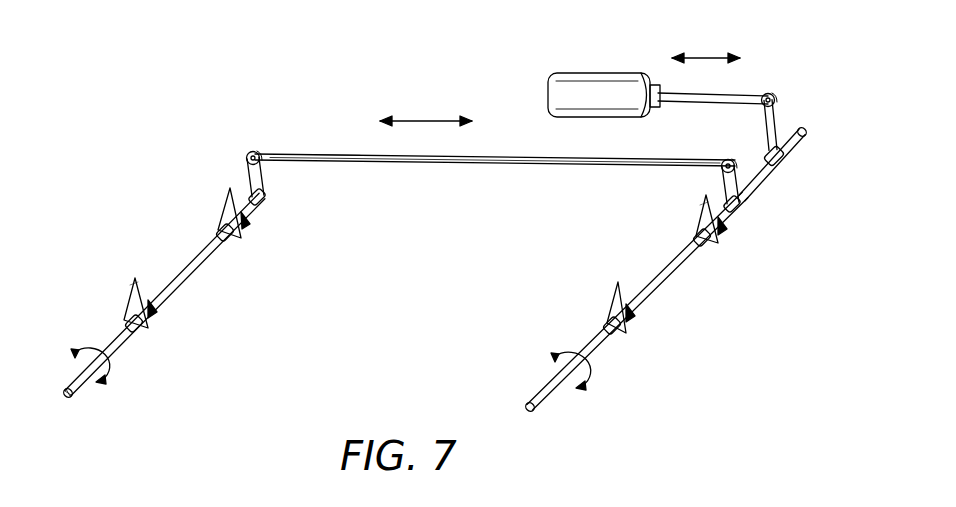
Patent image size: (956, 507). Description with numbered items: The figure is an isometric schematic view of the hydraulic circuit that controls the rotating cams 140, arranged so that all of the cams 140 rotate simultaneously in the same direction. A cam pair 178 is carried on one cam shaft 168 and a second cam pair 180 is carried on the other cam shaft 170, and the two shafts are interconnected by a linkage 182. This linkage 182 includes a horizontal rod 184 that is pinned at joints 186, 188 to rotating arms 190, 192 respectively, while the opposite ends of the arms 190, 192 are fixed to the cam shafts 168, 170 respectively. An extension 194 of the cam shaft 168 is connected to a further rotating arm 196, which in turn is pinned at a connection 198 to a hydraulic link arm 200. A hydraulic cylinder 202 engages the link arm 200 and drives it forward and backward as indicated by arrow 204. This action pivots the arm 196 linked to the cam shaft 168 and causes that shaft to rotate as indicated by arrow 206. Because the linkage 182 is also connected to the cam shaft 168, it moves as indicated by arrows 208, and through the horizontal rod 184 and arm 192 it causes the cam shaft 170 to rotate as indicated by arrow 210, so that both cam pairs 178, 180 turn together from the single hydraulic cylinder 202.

The cam 140 is at (148, 328).
The cam shaft 168 is at (667, 278).
The cam shaft 170 is at (182, 287).
The cam pair 178 is at (697, 210).
The cam pair 180 is at (227, 208).
The linkage 182 is at (452, 163).
The horizontal rod 184 is at (327, 152).
The joint 186 is at (737, 157).
The joint 188 is at (252, 150).
The rotating arm 190 is at (723, 180).
The rotating arm 192 is at (263, 173).
The extension 194 is at (770, 175).
The rotating arm 196 is at (780, 122).
The pivot pin 198 is at (780, 92).
The hydraulic link arm 200 is at (747, 92).
The hydraulic cylinder 202 is at (585, 73).
The arrow 204 is at (711, 58).
The arrow 206 is at (568, 350).
The arrows 208 is at (420, 121).
The arrow 210 is at (93, 347).